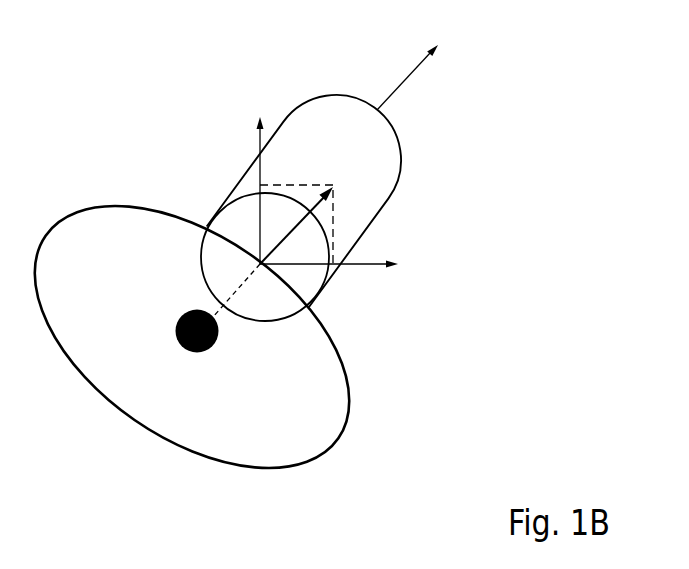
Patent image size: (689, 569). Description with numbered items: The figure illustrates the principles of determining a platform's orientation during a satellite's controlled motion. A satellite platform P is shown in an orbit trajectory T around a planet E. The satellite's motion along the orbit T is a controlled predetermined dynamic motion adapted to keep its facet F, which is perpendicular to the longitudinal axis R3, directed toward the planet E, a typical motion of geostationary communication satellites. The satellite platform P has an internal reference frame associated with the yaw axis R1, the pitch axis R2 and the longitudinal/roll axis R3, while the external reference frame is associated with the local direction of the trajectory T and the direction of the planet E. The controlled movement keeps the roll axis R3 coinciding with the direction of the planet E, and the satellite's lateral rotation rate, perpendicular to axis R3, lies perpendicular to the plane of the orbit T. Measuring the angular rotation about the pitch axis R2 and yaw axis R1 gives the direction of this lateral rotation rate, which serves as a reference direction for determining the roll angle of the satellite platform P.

The orbit trajectory T is at (150, 430).
The satellite platform P is at (238, 190).
The facet F is at (265, 257).
The planet E is at (217, 343).
The yaw axis R1 is at (240, 187).
The pitch axis R2 is at (351, 265).
The longitudinal/roll axis R3 is at (407, 73).